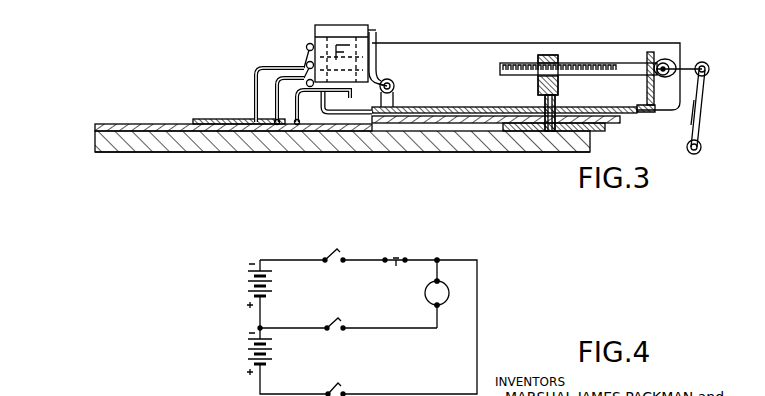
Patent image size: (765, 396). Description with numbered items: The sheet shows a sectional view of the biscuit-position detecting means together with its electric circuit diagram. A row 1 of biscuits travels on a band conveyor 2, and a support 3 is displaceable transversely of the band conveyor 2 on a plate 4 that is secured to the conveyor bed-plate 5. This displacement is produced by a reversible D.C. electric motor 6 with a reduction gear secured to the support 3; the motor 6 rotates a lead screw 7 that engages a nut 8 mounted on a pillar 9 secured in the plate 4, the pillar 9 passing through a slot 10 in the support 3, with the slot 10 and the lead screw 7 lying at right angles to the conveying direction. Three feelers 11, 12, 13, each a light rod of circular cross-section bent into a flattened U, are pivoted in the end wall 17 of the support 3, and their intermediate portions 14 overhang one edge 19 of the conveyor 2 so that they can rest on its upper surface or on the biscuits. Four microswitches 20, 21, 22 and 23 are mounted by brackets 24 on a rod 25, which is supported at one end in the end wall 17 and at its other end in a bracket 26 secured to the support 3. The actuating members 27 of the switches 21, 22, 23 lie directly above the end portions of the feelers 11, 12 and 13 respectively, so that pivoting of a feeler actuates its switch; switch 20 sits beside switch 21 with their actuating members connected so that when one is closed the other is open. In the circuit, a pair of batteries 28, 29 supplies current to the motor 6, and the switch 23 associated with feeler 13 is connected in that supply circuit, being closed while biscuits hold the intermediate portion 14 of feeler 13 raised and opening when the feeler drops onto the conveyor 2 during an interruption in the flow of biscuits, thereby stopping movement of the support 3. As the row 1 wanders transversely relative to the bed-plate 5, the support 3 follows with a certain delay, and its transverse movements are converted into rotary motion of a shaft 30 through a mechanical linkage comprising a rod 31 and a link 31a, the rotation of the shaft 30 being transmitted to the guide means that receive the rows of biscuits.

In FIG. 3, the row of biscuits 1 is at (197, 122).
In FIG. 3, the band conveyor 2 is at (96, 125).
In FIG. 3, the support 3 is at (526, 76).
In FIG. 3, the plate 4 is at (620, 126).
In FIG. 3, the conveyor bed-plate 5 is at (591, 147).
In FIG. 4, the reversible D.C. electric motor 6 is at (447, 304).
In FIG. 3, the lead screw 7 is at (504, 64).
In FIG. 3, the nut 8 is at (559, 58).
In FIG. 3, the pillar 9 is at (547, 100).
In FIG. 3, the slot 10 is at (463, 108).
In FIG. 3, the feeler 11 is at (294, 107).
In FIG. 3, the feeler 12 is at (275, 94).
In FIG. 3, the feeler 13 is at (254, 82).
In FIG. 3, the intermediate portion 14 is at (294, 125).
In FIG. 3, the end wall 17 is at (682, 51).
In FIG. 3, the edge of the conveyor 19 is at (413, 153).
In FIG. 3, the electric switch 20 is at (384, 76).
In FIG. 4, the electric switch 20 is at (395, 273).
In FIG. 4, the electric switch 21 is at (343, 381).
In FIG. 3, the electric switch 22 is at (378, 60).
In FIG. 4, the electric switch 22 is at (334, 267).
In FIG. 3, the electric switch 23 is at (368, 26).
In FIG. 4, the electric switch 23 is at (337, 315).
In FIG. 3, the brackets 24 is at (360, 67).
In FIG. 3, the rod 25 is at (395, 88).
In FIG. 3, the bracket 26 is at (380, 101).
In FIG. 3, the actuating members 27 is at (306, 84).
In FIG. 4, the battery 28 is at (250, 288).
In FIG. 4, the battery 29 is at (250, 352).
In FIG. 3, the shaft 30 is at (694, 155).
In FIG. 3, the rod 31 is at (701, 80).
In FIG. 3, the link 31a is at (690, 122).